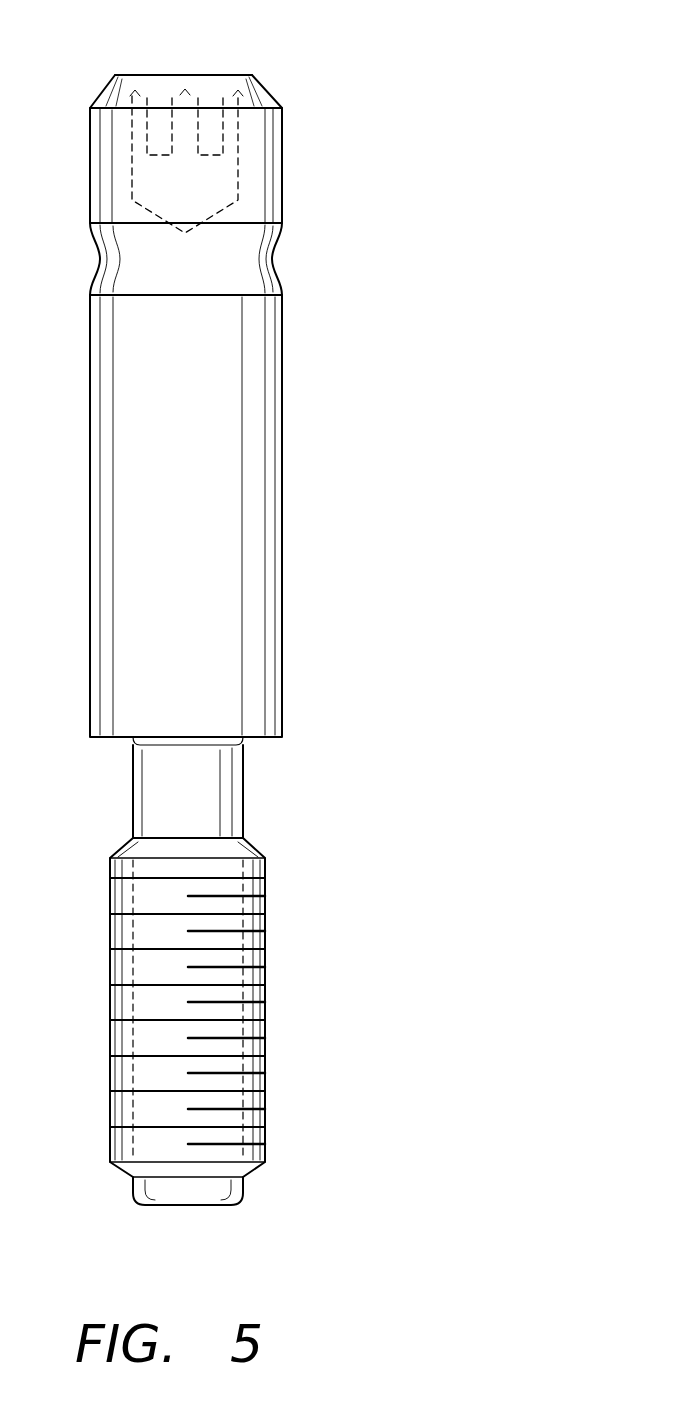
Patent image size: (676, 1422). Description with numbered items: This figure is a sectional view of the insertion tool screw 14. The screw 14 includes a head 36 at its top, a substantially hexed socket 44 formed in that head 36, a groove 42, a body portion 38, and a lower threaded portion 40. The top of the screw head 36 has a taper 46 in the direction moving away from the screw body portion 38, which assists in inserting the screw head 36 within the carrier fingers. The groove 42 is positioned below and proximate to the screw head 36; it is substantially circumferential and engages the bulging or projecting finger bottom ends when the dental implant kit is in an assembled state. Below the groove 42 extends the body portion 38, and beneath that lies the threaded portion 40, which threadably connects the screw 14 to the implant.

The insertion tool screw 14 is at (395, 523).
The head 36 is at (247, 119).
The body portion 38 is at (283, 432).
The lower threaded portion 40 is at (248, 941).
The groove 42 is at (273, 265).
The hexed socket 44 is at (208, 117).
The taper 46 is at (265, 103).